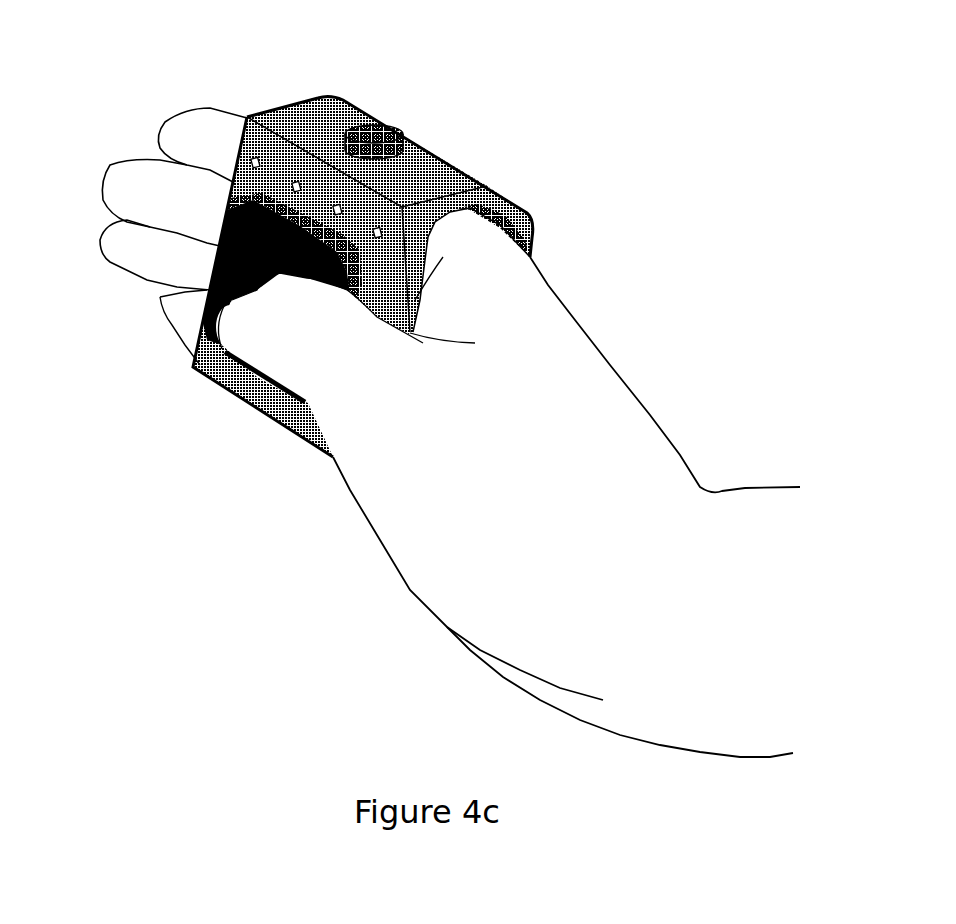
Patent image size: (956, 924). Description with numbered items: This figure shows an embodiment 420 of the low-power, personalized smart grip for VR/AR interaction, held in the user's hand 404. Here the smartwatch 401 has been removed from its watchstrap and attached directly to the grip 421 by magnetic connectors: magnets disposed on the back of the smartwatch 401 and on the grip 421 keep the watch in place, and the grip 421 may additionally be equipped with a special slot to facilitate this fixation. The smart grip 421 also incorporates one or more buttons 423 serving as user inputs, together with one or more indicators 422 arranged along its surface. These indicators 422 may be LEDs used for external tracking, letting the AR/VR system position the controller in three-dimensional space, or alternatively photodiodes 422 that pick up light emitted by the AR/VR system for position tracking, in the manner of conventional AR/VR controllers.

The embodiment of the low-power smart grip 420 is at (362, 247).
The grip 421 is at (313, 92).
The indicators 422 is at (250, 160).
The buttons 423 is at (400, 118).
The smartwatch 401 is at (207, 283).
The hand 404 is at (417, 597).